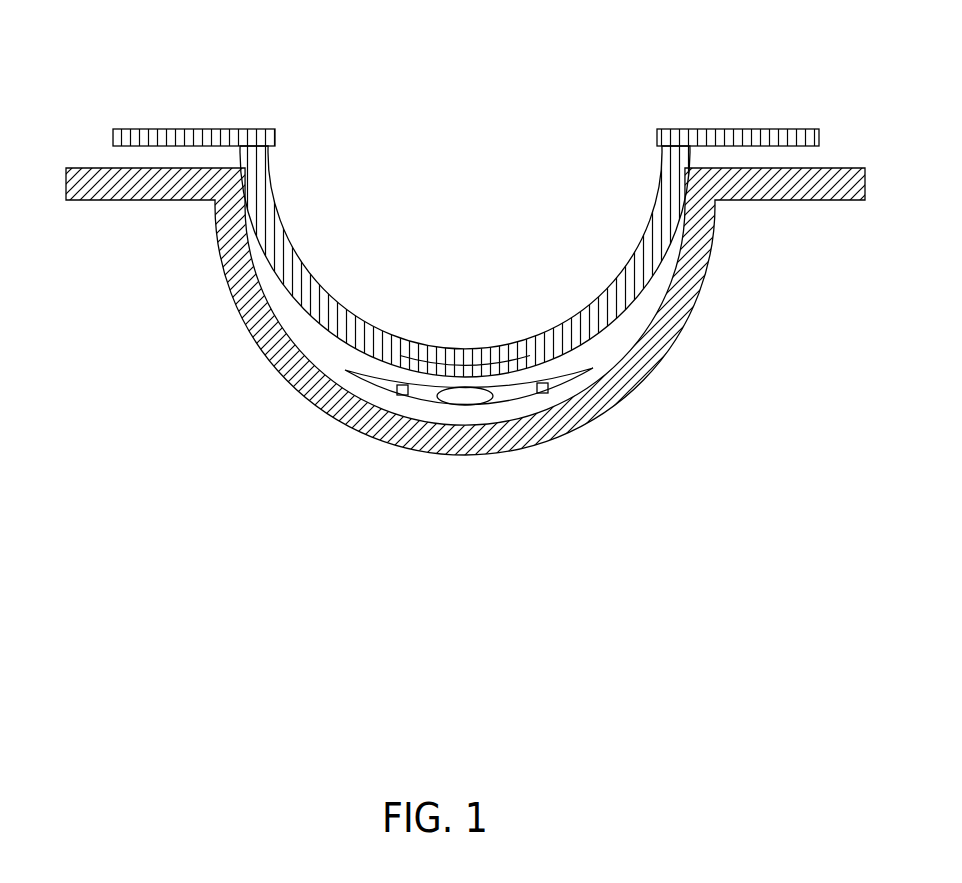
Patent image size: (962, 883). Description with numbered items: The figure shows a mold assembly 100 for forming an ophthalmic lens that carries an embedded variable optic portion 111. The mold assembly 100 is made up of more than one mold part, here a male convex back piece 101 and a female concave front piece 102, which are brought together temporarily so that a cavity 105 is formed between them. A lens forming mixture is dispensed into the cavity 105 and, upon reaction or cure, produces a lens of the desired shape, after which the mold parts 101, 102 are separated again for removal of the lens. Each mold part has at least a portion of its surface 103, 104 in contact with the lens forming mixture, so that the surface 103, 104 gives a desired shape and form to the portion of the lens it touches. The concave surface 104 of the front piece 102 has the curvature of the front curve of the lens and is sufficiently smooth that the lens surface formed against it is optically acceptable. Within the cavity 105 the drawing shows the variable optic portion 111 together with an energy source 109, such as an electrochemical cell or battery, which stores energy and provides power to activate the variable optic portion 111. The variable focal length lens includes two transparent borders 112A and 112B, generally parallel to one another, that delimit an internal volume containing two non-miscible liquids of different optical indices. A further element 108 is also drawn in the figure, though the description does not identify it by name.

The mold assembly 100 is at (465, 292).
The male convex piece 101 is at (642, 228).
The female concave piece 102 is at (328, 397).
The mold part surface 103 is at (512, 360).
The concave surface 104 is at (547, 407).
The cavity 105 is at (348, 352).
The second sensor 108 is at (548, 391).
The energy source 109 is at (404, 397).
The variable optic portion 111 is at (478, 404).
The first transparent border 112A is at (416, 399).
The second transparent border 112B is at (434, 400).